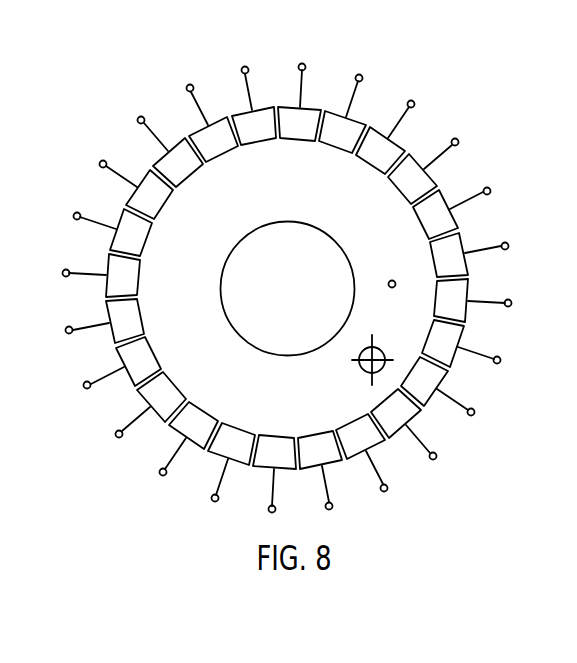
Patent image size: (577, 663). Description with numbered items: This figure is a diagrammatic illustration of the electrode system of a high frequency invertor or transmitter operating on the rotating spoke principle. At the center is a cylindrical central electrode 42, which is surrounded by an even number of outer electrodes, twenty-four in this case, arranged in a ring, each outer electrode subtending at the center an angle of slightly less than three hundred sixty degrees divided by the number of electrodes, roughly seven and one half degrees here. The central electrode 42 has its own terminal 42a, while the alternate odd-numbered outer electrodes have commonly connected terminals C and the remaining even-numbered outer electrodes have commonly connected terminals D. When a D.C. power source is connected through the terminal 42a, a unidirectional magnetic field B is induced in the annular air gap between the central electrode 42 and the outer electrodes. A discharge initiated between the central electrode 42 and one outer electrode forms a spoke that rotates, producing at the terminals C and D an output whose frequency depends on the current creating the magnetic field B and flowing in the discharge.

The cylindrical central electrode 42 is at (299, 300).
The terminal of the cylindrical central electrode 42a is at (355, 285).
The unidirectional magnetic field B is at (366, 364).
The commonly connected terminals of the odd-numbered outer electrodes C is at (381, 257).
The commonly connected terminals of the even-numbered outer electrodes D is at (405, 234).